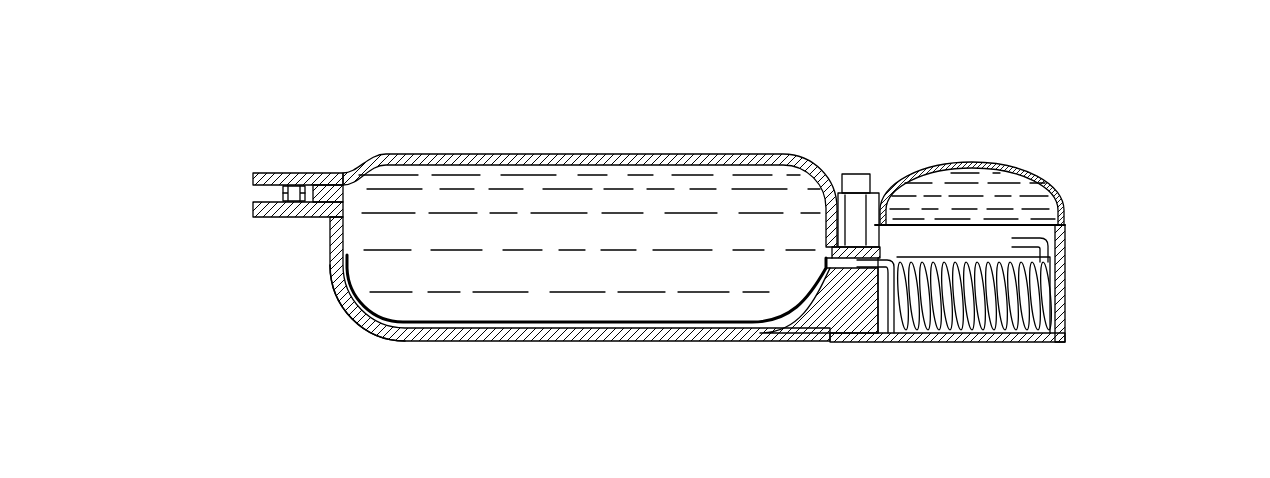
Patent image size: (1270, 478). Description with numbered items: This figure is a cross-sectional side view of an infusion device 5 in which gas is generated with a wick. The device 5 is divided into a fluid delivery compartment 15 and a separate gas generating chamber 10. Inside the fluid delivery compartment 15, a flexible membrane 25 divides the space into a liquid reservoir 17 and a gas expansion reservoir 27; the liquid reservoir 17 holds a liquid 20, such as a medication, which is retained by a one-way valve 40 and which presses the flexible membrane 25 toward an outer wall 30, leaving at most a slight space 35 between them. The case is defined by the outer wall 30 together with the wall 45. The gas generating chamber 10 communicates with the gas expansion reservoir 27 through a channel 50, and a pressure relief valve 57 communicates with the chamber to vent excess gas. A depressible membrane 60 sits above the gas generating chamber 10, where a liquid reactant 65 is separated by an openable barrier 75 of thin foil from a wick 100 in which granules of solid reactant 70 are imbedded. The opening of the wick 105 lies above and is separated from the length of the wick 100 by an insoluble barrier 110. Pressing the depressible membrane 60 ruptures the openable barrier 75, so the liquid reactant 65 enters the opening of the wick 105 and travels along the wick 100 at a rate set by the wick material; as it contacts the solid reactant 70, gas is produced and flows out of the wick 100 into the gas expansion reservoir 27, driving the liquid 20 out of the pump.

The infusion device 5 is at (688, 86).
The gas generating chamber 10 is at (1144, 108).
The fluid delivery compartment 15 is at (331, 100).
The liquid reservoir 17 is at (538, 178).
The liquid 20 is at (402, 195).
The flexible membrane 25 is at (330, 297).
The gas expansion reservoir 27 is at (563, 347).
The outer wall 30 is at (422, 341).
The space 35 is at (797, 318).
The one-way valve 40 is at (292, 185).
The wall 45 is at (697, 155).
The channel 50 is at (846, 266).
The pressure relief valve 57 is at (860, 174).
The depressible membrane 60 is at (966, 163).
The liquid reactant 65 is at (990, 186).
The solid reactant 70 is at (950, 335).
The openable barrier 75 is at (1035, 224).
The wick 100 is at (1068, 300).
The opening of the wick 105 is at (1008, 232).
The insoluble barrier 110 is at (966, 256).